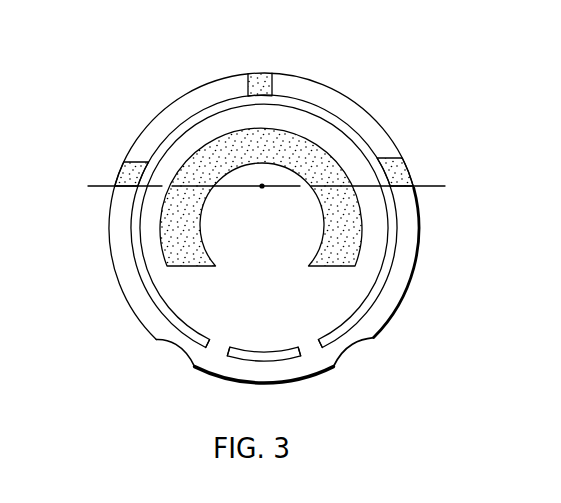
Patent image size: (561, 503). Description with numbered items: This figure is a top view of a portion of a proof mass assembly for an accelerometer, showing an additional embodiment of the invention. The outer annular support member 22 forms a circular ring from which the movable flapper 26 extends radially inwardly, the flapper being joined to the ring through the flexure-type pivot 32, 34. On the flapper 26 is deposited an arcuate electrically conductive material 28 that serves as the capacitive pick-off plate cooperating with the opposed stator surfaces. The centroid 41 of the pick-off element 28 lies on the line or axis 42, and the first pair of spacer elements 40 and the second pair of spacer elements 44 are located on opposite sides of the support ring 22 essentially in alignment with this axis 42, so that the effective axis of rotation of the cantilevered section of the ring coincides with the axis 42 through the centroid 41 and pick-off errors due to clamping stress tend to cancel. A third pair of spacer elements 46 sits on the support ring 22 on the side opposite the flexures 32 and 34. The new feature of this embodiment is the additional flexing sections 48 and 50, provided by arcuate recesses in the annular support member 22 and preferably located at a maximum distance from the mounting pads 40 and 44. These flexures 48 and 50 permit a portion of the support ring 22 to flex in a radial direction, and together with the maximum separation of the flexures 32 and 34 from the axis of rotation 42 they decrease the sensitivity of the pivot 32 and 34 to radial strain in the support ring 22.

The outer annular support member 22 is at (401, 272).
The flapper 26 is at (340, 290).
The capacitive pick-off plate 28 is at (307, 145).
The flexure 32 is at (218, 343).
The flexure 34 is at (312, 347).
The spacer element 40 is at (127, 173).
The centroid of the pick-off element 41 is at (261, 187).
The axis 42 is at (88, 186).
The spacer element 44 is at (403, 170).
The spacer element 46 is at (259, 82).
The flexing section 48 is at (173, 357).
The flexing section 50 is at (350, 352).